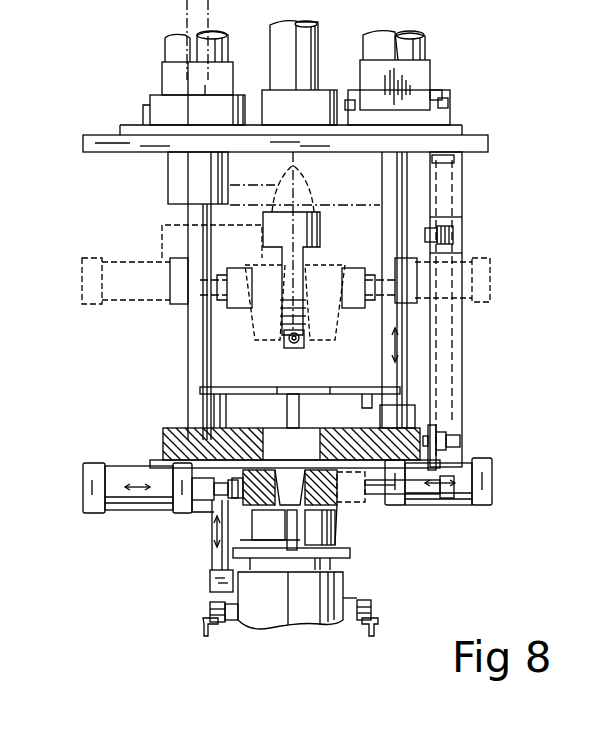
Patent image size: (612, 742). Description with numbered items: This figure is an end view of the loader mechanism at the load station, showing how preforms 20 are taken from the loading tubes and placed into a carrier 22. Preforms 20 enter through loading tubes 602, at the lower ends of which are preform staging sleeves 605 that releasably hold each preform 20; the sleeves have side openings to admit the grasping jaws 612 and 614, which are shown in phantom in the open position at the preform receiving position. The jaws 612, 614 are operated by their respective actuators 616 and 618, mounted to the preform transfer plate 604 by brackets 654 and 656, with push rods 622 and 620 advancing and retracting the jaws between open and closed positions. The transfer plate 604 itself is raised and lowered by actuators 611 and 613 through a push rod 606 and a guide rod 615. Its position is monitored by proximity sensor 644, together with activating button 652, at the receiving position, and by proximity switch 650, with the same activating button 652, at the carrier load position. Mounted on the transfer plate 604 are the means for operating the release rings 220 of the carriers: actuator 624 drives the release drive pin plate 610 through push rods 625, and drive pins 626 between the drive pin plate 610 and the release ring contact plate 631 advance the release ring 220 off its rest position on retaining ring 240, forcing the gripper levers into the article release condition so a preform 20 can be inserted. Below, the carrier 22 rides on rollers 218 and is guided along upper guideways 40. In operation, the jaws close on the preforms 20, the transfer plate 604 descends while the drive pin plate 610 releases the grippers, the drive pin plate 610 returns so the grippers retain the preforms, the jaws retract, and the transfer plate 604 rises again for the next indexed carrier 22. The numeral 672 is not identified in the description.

The preform 20 is at (280, 320).
The carrier 22 is at (384, 567).
The upper guideway 40 is at (203, 620).
The roller 218 is at (209, 605).
The release ring 220 is at (350, 556).
The retaining ring 240 is at (347, 516).
The loading tube 602 is at (303, 27).
The preform transfer plate 604 is at (165, 445).
The preform staging sleeve 605 is at (318, 215).
The push rod 606 is at (383, 168).
The release drive pin plate 610 is at (297, 388).
The actuator 611 is at (216, 33).
The preform grasping jaw 612 is at (328, 310).
The actuator 613 is at (431, 66).
The preform grasping jaw 614 is at (252, 310).
The guide rod 615 is at (205, 80).
The actuator 616 is at (92, 463).
The actuator 618 is at (492, 462).
The push rod 620 is at (217, 512).
The push rod 622 is at (360, 505).
The actuator 624 is at (208, 572).
The push rod 625 is at (224, 422).
The drive pin 626 is at (287, 522).
The release ring contact plate 631 is at (332, 548).
The proximity sensor 644 is at (452, 232).
The proximity switch 650 is at (455, 440).
The activating button 652 is at (424, 440).
The bracket 654 is at (386, 510).
The bracket 656 is at (203, 512).
The right frame 672 is at (462, 186).